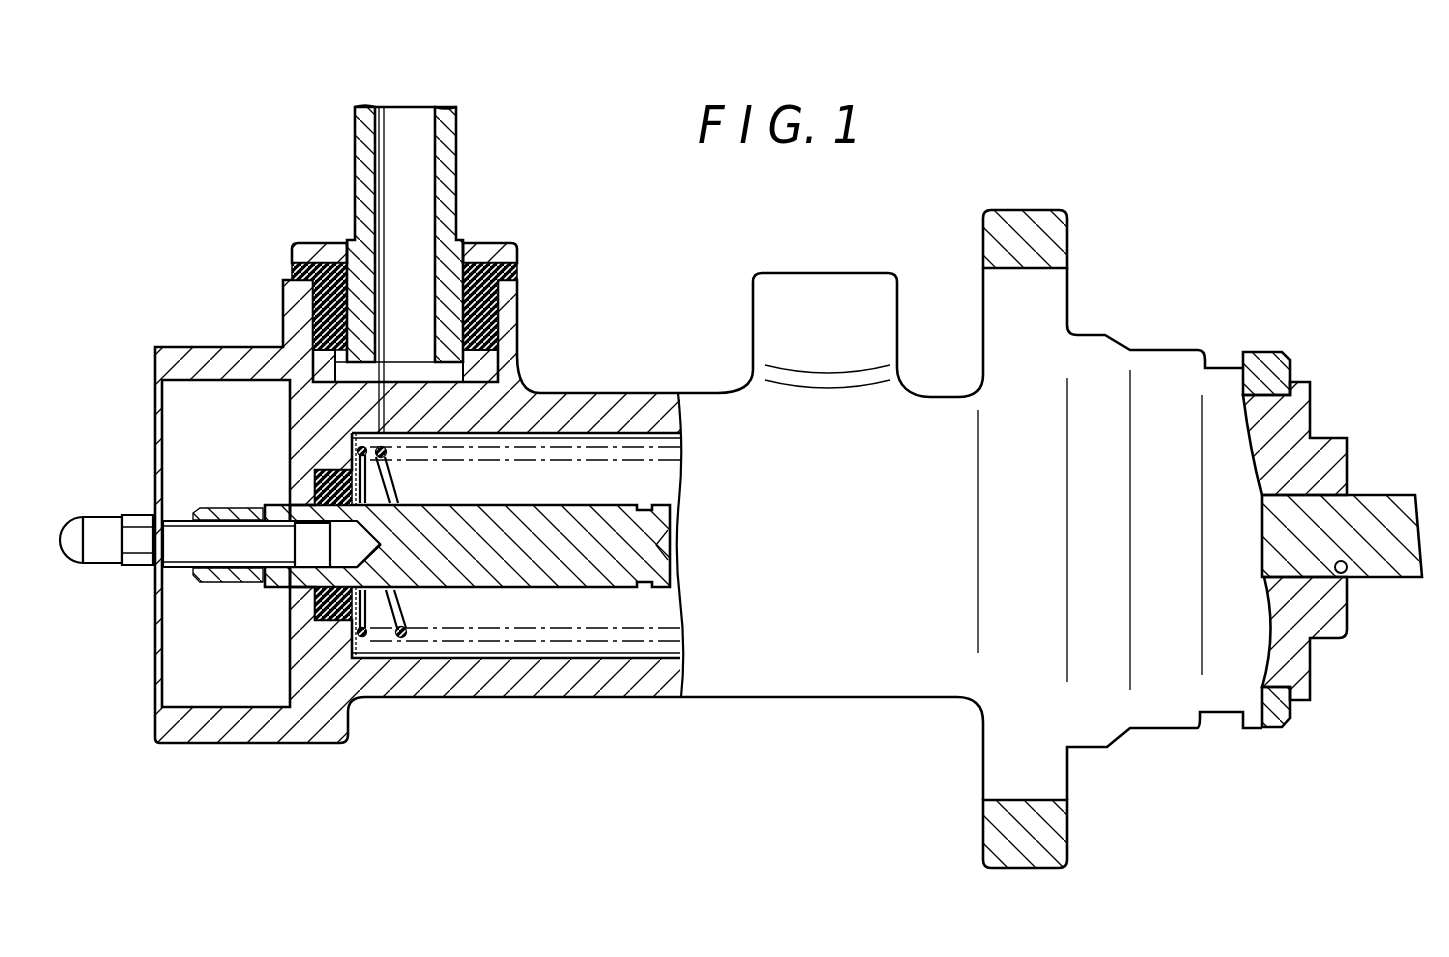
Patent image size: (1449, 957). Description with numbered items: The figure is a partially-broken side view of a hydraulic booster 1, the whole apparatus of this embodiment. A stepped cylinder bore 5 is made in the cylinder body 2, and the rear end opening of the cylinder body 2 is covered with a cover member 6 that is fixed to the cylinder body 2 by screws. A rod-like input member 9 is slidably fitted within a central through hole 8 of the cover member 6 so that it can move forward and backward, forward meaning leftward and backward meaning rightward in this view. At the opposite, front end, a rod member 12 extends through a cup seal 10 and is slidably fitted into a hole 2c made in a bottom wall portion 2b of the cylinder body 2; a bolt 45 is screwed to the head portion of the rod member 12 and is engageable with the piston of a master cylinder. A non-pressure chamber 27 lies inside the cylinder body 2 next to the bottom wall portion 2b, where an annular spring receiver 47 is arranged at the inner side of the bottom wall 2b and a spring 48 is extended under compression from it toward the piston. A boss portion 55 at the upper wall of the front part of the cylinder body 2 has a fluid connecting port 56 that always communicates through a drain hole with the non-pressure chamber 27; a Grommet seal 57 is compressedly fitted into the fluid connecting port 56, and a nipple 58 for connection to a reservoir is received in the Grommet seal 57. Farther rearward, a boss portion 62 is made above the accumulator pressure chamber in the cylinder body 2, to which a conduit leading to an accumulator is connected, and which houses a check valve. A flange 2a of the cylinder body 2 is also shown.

The hydraulic booster 1 is at (1137, 323).
The cylinder body 2 is at (636, 394).
The mounting flange 2a is at (1068, 828).
The bottom wall portion 2b is at (302, 437).
The hole 2c is at (286, 578).
The stepped cylinder bore 5 is at (603, 440).
The cover member 6 is at (1327, 449).
The central through hole 8 is at (1346, 584).
The rod-like input member 9 is at (1373, 497).
The cup seal 10 is at (313, 488).
The rod member 12 is at (528, 575).
The non-pressure chamber 27 is at (548, 492).
The bolt 45 is at (102, 552).
The annular spring receiver 47 is at (370, 652).
The spring 48 is at (405, 645).
The boss portion 55 is at (498, 326).
The fluid connecting port 56 is at (472, 380).
The Grommet seal 57 is at (517, 283).
The nipple 58 is at (456, 258).
The boss portion 62 is at (757, 321).